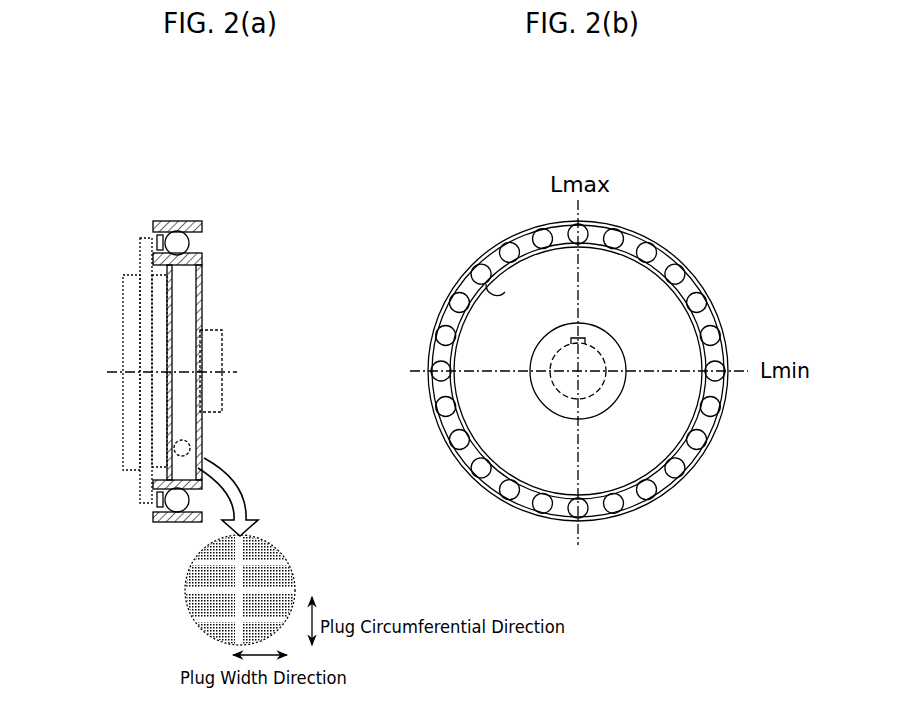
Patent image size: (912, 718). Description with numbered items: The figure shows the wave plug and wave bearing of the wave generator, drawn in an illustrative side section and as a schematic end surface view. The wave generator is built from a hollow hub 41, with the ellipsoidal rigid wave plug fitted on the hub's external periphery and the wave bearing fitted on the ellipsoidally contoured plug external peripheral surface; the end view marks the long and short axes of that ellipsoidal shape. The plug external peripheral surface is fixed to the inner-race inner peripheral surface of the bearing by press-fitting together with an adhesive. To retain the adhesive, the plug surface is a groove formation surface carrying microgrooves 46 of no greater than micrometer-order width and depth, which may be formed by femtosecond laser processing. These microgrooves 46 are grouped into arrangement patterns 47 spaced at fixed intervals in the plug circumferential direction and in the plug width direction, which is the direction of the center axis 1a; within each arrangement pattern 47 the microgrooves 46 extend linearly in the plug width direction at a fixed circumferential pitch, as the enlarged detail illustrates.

The center axis 1a is at (117, 367).
The hollow hub 41 is at (118, 411).
The microgrooves 46 is at (288, 568).
The arrangement patterns 47 is at (287, 571).